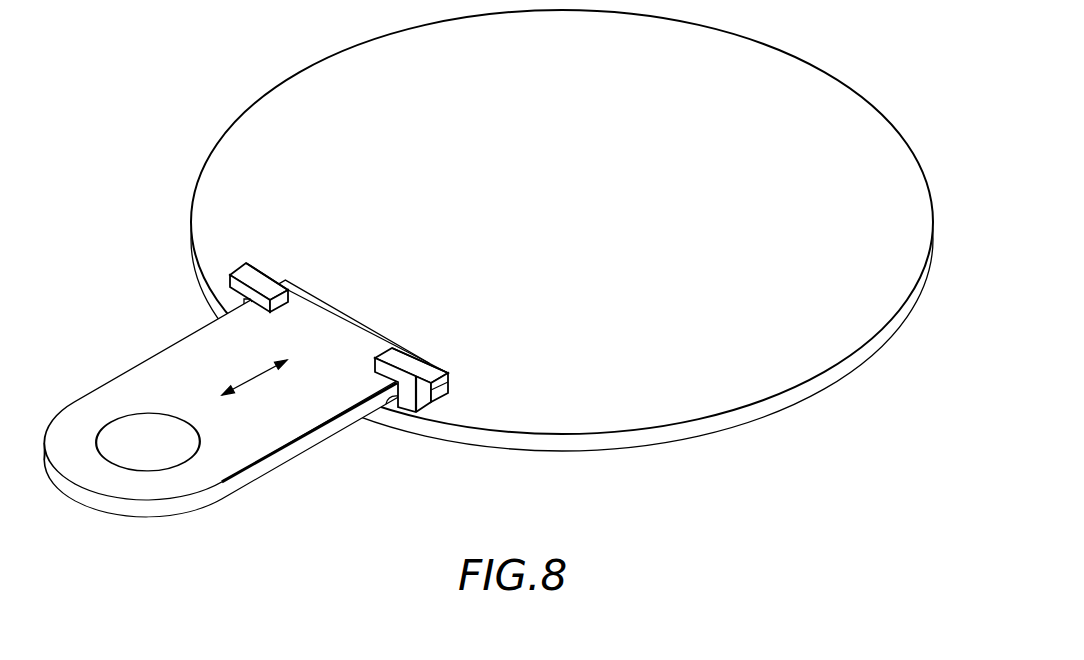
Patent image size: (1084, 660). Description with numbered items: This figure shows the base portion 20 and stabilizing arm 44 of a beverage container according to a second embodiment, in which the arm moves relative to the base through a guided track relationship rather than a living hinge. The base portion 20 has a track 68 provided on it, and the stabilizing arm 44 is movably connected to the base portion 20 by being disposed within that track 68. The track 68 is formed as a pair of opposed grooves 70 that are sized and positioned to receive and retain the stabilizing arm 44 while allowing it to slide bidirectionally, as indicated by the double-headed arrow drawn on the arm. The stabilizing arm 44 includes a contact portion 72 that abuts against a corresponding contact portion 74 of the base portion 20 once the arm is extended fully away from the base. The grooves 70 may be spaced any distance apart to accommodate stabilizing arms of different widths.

The base portion 20 is at (783, 66).
The stabilizing arm 44 is at (150, 368).
The track 68 is at (274, 287).
The grooves 70 is at (246, 300).
The contact portion 72 is at (446, 372).
The contact portion 74 is at (268, 273).